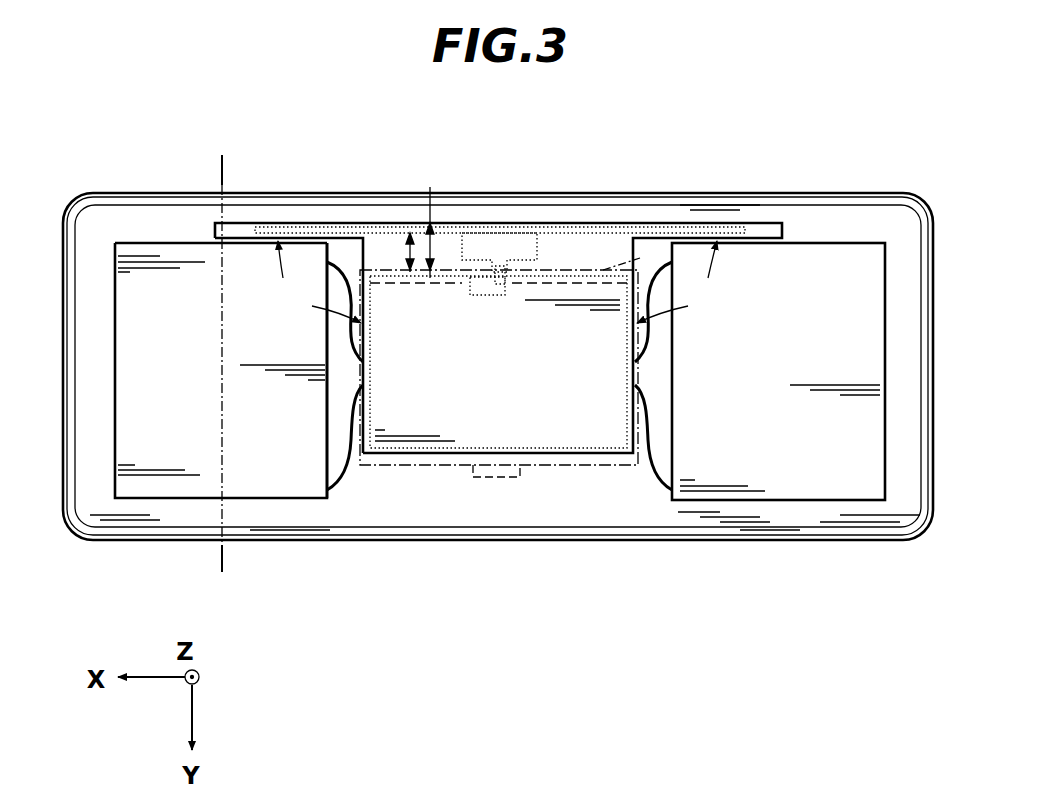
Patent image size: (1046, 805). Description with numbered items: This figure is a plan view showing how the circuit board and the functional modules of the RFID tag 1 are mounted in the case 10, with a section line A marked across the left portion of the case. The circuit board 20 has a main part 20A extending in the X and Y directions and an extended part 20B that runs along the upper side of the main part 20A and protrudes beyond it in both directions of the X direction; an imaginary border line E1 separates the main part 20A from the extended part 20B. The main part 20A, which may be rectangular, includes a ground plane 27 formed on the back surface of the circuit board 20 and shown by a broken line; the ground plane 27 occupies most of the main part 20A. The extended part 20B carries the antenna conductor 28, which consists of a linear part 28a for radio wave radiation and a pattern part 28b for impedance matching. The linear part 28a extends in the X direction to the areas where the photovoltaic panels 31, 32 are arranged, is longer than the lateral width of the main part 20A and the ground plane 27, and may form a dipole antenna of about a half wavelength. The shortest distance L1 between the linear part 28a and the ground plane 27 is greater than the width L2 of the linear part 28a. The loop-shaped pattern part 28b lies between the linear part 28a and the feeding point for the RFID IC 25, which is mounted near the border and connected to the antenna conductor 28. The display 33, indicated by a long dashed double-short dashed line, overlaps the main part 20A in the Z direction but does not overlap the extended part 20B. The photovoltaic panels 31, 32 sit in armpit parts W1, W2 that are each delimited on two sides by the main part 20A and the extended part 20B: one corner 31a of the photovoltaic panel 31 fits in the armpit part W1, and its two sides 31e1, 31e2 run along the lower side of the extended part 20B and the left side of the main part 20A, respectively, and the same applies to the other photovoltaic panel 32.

The RFID tag 1 is at (232, 82).
The case 10 is at (903, 510).
The circuit board 20 is at (560, 152).
The main part 20A is at (553, 270).
The extended part 20B is at (613, 247).
The RFID IC 25 is at (506, 286).
The ground plane 27 is at (487, 415).
The antenna conductor 28 is at (538, 130).
The linear part 28a is at (444, 226).
The pattern part 28b is at (493, 233).
The photovoltaic panel 31 is at (180, 487).
The corner 31a is at (326, 245).
The side 31e1 is at (165, 240).
The side 31e2 is at (325, 455).
The photovoltaic panel 32 is at (800, 480).
The display 33 is at (620, 466).
The border line E1 is at (639, 254).
The shortest distance L1 is at (391, 252).
The width L2 is at (428, 220).
The armpit part W1 is at (317, 282).
The armpit part W2 is at (681, 282).
The section line A- A is at (216, 164).